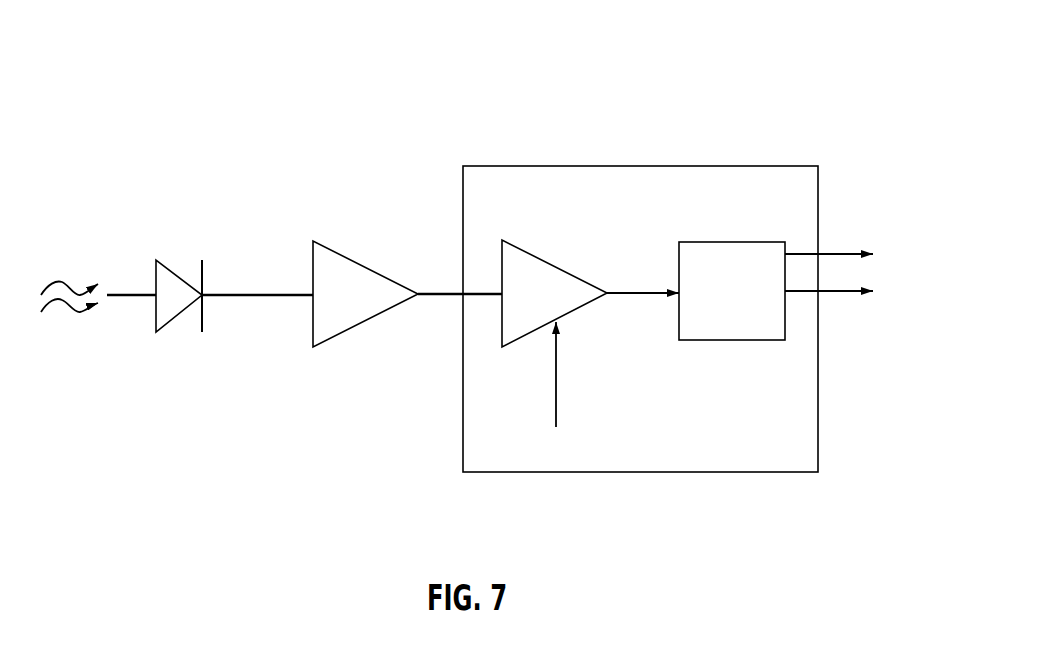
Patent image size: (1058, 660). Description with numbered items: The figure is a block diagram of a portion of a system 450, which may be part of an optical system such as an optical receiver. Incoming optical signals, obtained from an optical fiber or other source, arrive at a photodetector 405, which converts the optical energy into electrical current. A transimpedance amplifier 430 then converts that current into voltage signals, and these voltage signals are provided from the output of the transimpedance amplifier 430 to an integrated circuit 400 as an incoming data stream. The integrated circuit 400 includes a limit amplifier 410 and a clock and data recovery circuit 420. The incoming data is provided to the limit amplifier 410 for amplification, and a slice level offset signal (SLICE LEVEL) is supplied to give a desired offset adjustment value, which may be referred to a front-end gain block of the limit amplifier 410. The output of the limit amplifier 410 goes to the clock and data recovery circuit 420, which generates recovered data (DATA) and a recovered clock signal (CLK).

The system 450 is at (339, 70).
The photodetector 405 is at (177, 277).
The transimpedance amplifier 430 is at (367, 263).
The integrated circuit 400 is at (640, 166).
The limit amplifier 410 is at (555, 263).
The clock and data recovery circuit 420 is at (732, 242).